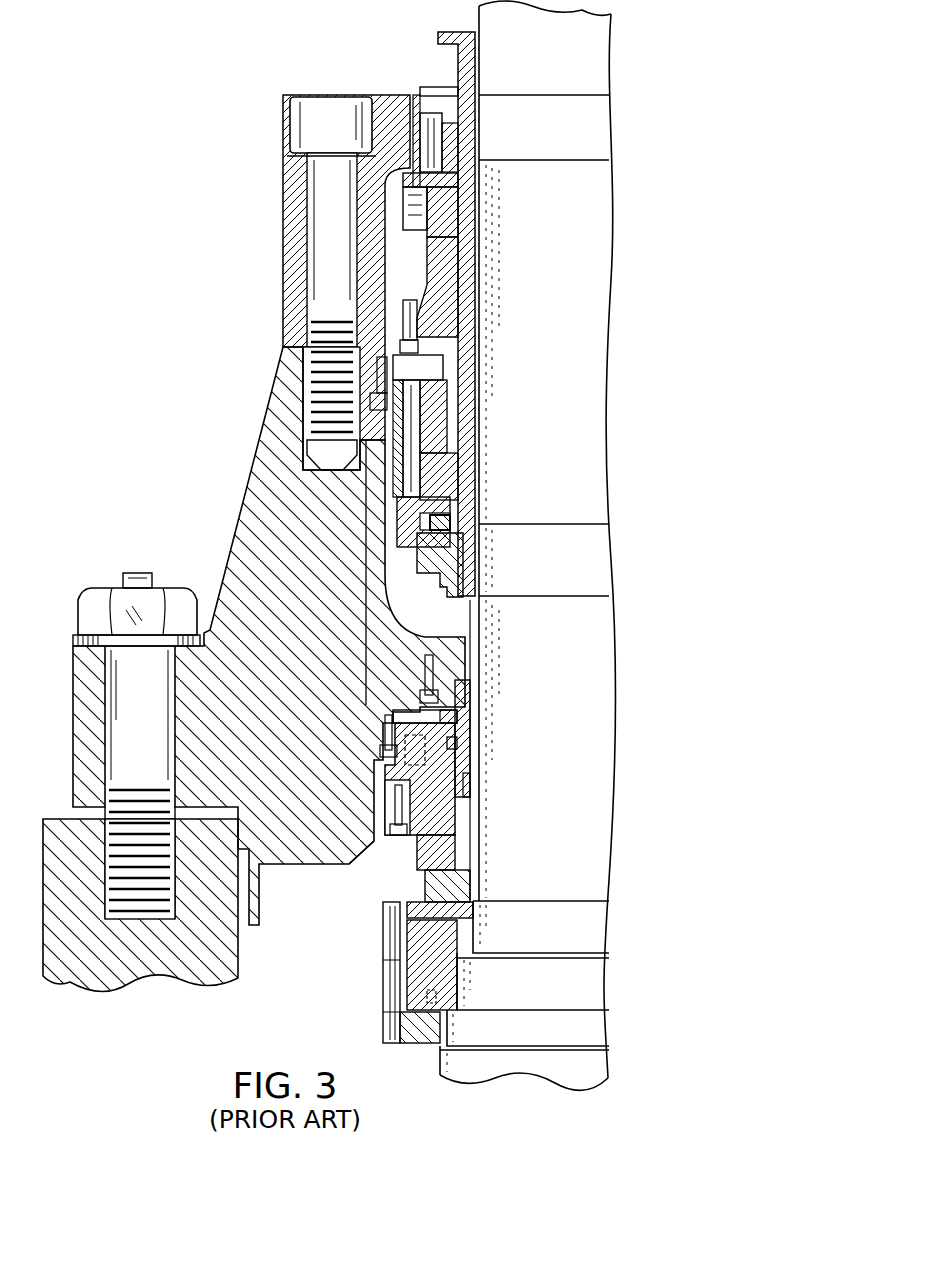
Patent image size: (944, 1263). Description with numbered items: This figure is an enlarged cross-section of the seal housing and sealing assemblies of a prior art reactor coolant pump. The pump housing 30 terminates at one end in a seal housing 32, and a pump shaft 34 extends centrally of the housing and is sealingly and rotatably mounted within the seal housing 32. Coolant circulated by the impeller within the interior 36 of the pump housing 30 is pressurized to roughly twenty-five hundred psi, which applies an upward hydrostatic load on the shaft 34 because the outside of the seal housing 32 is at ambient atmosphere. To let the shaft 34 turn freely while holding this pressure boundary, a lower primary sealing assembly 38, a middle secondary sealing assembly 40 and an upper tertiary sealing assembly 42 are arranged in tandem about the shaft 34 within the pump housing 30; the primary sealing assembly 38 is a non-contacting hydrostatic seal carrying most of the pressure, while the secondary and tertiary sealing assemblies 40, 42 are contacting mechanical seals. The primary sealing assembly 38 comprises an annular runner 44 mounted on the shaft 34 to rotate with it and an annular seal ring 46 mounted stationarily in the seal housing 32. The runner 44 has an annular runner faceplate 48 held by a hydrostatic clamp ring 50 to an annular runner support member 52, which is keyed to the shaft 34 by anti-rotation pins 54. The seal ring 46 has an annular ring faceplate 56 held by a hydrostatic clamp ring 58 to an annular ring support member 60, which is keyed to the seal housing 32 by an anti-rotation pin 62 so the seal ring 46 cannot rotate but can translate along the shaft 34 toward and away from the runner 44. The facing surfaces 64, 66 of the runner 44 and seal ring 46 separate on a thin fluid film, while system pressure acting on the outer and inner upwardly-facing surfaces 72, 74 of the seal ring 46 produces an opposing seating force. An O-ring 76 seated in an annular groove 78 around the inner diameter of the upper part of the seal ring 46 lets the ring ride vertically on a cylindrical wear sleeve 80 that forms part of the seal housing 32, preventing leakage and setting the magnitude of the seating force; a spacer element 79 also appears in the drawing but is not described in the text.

The pump housing 30 is at (113, 968).
The seal housing 32 is at (258, 526).
The pump shaft 34 is at (576, 60).
The interior 36 is at (262, 968).
The lower primary sealing assembly 38 is at (492, 818).
The middle secondary sealing assembly 40 is at (498, 500).
The upper tertiary sealing assembly 42 is at (518, 184).
The annular runner 44 is at (478, 938).
The annular seal ring 46 is at (508, 820).
The annular runner faceplate 48 is at (451, 890).
The hydrostatic clamp ring 50 is at (415, 862).
The annular runner support member 52 is at (411, 984).
The anti-rotation pins 54 is at (426, 1003).
The annular ring faceplate 56 is at (451, 847).
The hydrostatic clamp ring 58 is at (379, 805).
The annular ring support member 60 is at (471, 803).
The anti-rotation pin 62 is at (396, 718).
The facing surface of the runner 64 is at (388, 846).
The facing surface of the seal ring 66 is at (436, 876).
The outer peripheral upwardly-facing surface 72 is at (456, 689).
The inner peripheral upwardly-facing surface 74 is at (468, 777).
The O-ring 76 is at (449, 730).
The annular groove 78 is at (449, 730).
The spacer 79 is at (396, 758).
The cylindrical wear sleeve 80 is at (464, 757).